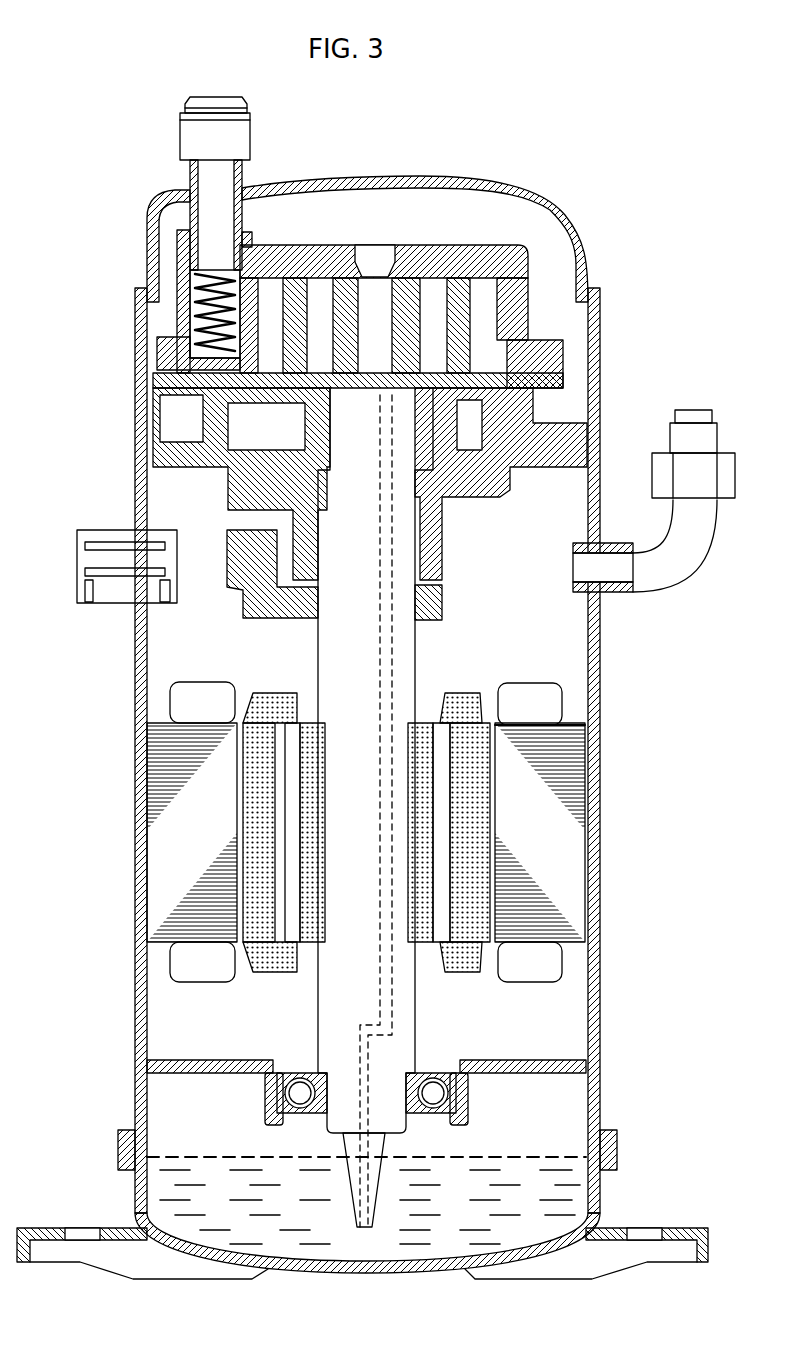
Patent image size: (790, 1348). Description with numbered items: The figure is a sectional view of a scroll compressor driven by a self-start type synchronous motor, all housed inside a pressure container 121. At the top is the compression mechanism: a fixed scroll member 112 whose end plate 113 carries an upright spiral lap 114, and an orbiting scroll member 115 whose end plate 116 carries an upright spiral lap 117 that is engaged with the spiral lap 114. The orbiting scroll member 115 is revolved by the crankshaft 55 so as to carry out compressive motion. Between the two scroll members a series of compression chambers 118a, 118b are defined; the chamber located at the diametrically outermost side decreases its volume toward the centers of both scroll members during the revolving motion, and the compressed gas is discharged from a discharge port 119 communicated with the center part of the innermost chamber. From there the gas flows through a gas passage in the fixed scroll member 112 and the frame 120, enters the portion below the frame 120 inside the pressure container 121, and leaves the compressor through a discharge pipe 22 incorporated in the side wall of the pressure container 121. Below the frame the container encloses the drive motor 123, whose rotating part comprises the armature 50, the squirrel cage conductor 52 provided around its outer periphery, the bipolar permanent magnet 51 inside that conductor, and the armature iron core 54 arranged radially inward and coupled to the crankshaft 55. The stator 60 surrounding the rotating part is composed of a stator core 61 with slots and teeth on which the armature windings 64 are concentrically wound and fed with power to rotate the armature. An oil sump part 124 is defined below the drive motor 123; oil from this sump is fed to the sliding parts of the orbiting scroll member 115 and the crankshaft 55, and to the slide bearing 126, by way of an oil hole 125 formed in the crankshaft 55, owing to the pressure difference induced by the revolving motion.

The discharge pipe 22 is at (718, 515).
The armature 50 is at (555, 905).
The permanent magnet 51 is at (437, 807).
The squirrel cage conductor 52 is at (258, 820).
The armature iron core 54 is at (418, 770).
The crankshaft 55 is at (340, 617).
The stator 60 is at (360, 834).
The stator core 61 is at (160, 765).
The armature windings 64 is at (172, 962).
The fixed scroll member 112 is at (493, 247).
The end plate 113 is at (437, 253).
The spiral lap 114 is at (320, 268).
The orbiting scroll member 115 is at (200, 410).
The end plate 116 is at (212, 385).
The spiral lap 117 is at (507, 310).
The compression chamber 118a is at (507, 277).
The compression chamber 118b is at (210, 315).
The discharge port 119 is at (372, 253).
The frame 120 is at (227, 483).
The pressure container 121 is at (600, 660).
The drive motor 123 is at (575, 725).
The oil sump part 124 is at (520, 1160).
The oil hole 125 is at (395, 1005).
The slide bearing 126 is at (440, 543).